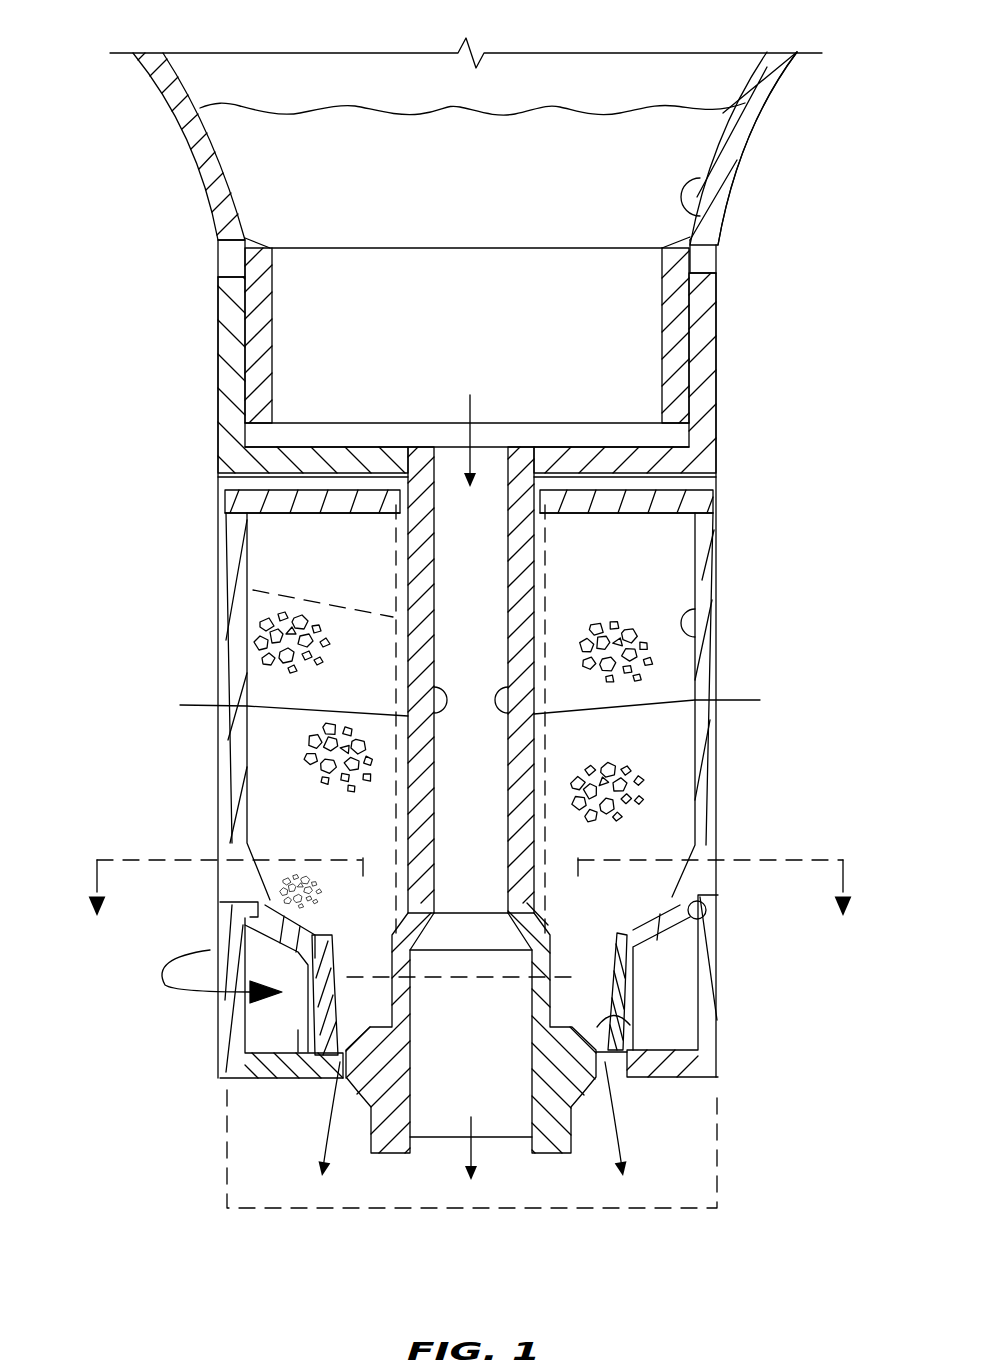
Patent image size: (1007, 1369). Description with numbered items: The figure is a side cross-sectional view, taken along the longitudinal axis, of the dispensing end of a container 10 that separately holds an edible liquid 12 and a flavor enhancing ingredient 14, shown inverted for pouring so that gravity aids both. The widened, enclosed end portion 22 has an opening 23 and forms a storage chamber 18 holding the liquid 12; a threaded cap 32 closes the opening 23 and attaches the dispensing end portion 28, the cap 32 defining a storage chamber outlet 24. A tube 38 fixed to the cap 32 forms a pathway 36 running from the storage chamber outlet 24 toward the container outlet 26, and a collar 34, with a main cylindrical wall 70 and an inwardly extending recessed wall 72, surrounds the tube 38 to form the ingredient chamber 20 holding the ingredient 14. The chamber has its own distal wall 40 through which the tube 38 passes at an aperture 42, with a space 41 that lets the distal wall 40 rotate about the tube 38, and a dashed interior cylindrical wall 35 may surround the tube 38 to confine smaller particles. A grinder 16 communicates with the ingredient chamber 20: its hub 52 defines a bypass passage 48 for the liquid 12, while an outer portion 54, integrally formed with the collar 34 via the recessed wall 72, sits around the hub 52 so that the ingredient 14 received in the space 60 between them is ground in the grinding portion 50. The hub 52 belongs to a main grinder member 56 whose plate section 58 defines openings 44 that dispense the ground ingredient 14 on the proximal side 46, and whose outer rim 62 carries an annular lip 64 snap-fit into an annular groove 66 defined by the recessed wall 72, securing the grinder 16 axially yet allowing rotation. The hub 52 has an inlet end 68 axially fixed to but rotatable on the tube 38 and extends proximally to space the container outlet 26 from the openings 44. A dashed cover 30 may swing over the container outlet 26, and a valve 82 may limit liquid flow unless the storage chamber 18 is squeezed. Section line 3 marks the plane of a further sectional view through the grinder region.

The container 10 is at (133, 130).
The edible liquid 12 is at (345, 125).
The flavor enhancing ingredient 14 is at (268, 627).
The grinder 16 is at (700, 978).
The storage chamber 18 is at (693, 204).
The ingredient chamber 20 is at (683, 638).
The enclosed end portion 22 is at (776, 83).
The opening 23 is at (275, 312).
The storage chamber outlet 24 is at (432, 457).
The container outlet 26 is at (417, 1152).
The dispensing end portion 28 is at (168, 1185).
The cover 30 is at (260, 1212).
The threaded cap 32 is at (710, 342).
The collar 34 is at (234, 534).
The interior cylindrical wall 35 is at (254, 592).
The pathway 36 is at (664, 702).
The tube 38 is at (277, 707).
The distal wall 40 is at (307, 500).
The space 41 is at (540, 512).
The aperture 42 is at (398, 522).
The opening 44 is at (330, 1067).
The proximal side 46 is at (608, 1150).
The bypass passage 48 is at (497, 1150).
The grinding portion 50 is at (343, 918).
The hub 52 is at (549, 997).
The outer portion 54 is at (312, 985).
The main grinder member 56 is at (240, 1060).
The plate section 58 is at (677, 1077).
The space 60 is at (308, 950).
The outer rim 62 is at (712, 987).
The annular lip 64 is at (700, 933).
The annular groove 66 is at (705, 903).
The inlet end 68 is at (407, 922).
The cylindrical wall 70 is at (708, 578).
The recessed wall 72 is at (712, 790).
The valve 82 is at (520, 1150).
The section line 3- 3 is at (468, 907).